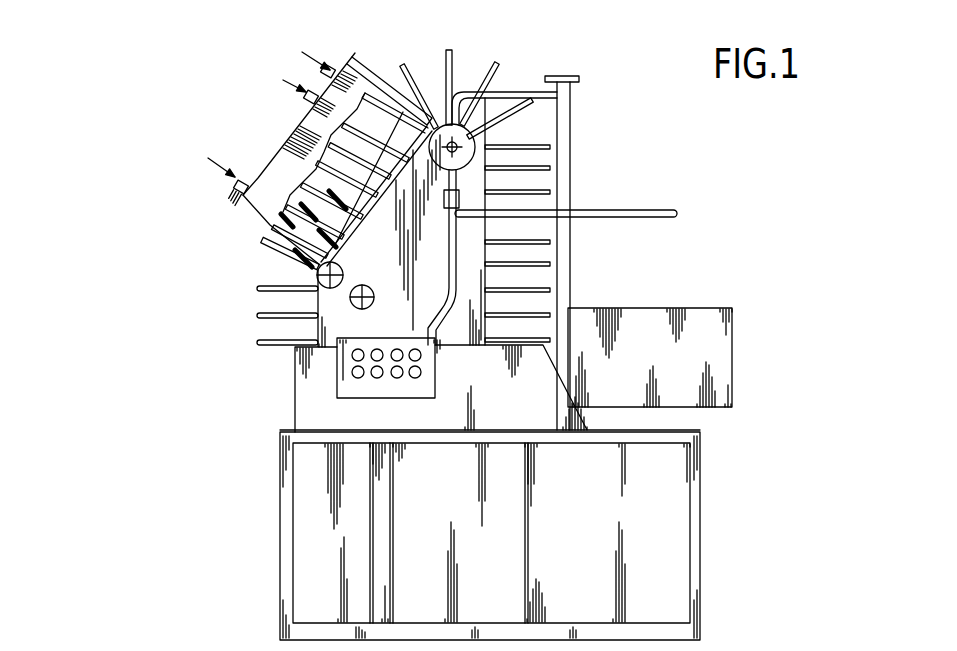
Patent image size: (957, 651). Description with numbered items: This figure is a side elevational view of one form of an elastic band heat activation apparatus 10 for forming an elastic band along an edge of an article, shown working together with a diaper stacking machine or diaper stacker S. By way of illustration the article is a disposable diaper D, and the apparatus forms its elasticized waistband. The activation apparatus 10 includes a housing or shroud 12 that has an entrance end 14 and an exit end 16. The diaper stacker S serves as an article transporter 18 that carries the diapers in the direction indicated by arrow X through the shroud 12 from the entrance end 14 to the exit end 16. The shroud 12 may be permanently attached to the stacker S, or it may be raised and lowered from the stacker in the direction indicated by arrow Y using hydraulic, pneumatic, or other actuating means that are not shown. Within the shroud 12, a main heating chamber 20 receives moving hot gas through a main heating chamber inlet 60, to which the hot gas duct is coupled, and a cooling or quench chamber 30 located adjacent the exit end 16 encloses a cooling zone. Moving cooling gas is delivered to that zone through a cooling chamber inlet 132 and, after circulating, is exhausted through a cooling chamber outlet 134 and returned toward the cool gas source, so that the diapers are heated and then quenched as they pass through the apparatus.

The elastic band heat activation apparatus 10 is at (130, 140).
The housing or shroud 12 is at (314, 123).
The entrance end 14 is at (262, 220).
The exit end 16 is at (356, 62).
The article transporter 18 is at (240, 317).
The main heating chamber 20 is at (295, 185).
The cooling or quench chamber 30 is at (367, 117).
The main heating chamber inlet 60 is at (236, 190).
The cooling chamber inlet 132 is at (305, 99).
The cooling chamber outlet 134 is at (323, 75).
The disposable diaper D is at (283, 254).
The diaper stacking machine or diaper stacker S is at (312, 501).
The arrow X is at (395, 50).
The arrow Y is at (333, 47).